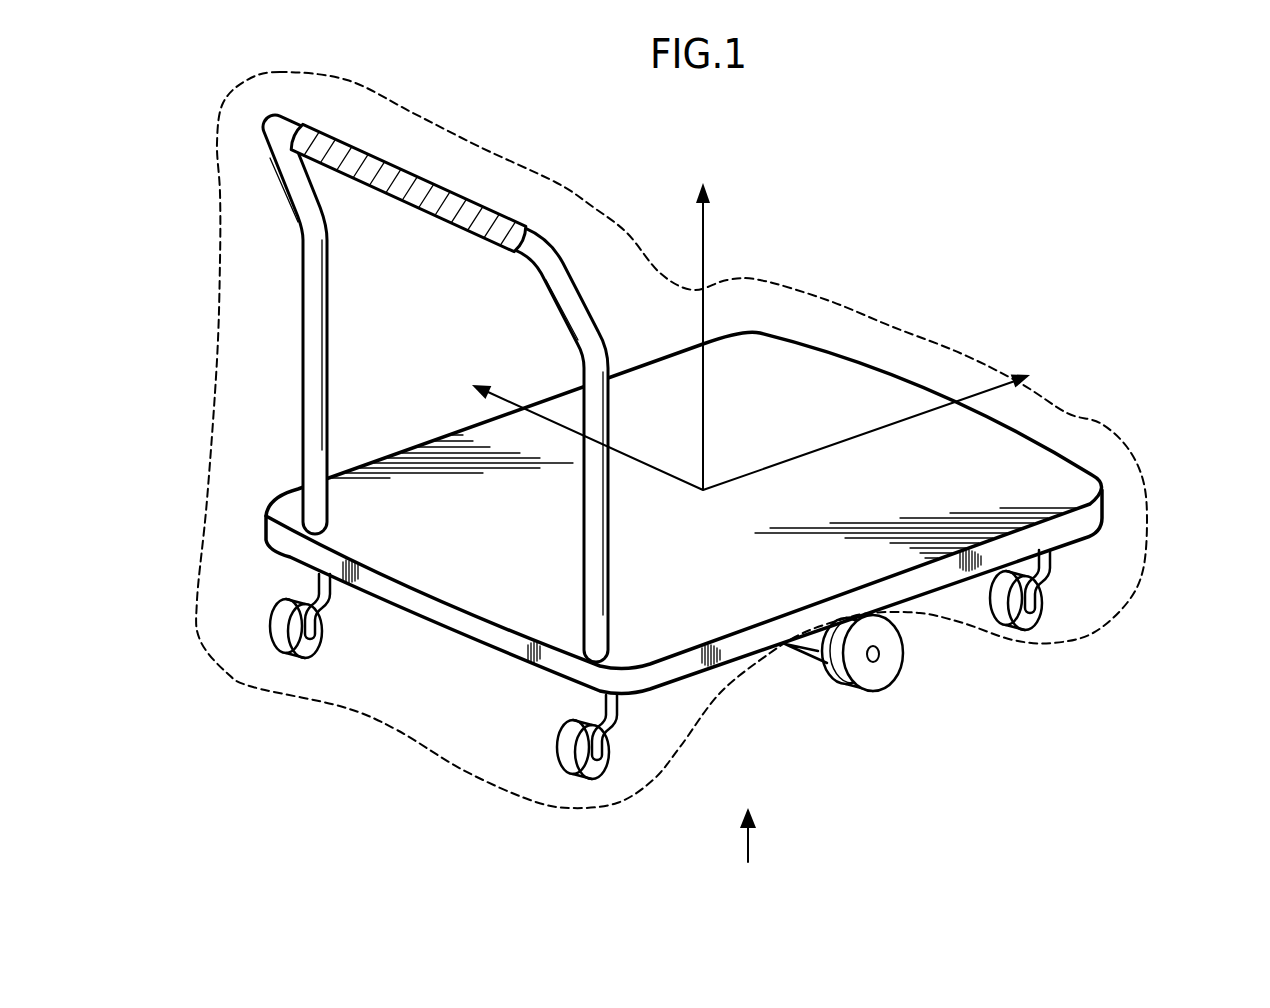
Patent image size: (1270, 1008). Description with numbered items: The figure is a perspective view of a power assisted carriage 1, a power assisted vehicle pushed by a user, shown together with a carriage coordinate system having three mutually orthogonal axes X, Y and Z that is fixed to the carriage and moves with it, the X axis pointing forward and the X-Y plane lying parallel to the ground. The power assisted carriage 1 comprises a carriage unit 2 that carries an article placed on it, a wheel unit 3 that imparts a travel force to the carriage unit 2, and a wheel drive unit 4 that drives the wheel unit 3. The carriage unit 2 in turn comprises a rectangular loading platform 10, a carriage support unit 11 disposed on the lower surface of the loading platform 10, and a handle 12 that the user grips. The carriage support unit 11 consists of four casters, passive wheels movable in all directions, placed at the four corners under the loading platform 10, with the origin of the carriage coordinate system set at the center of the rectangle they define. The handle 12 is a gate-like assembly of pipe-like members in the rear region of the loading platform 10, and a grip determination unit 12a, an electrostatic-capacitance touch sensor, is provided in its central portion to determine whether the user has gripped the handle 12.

The power assisted carriage 1 is at (288, 741).
The carriage unit 2 is at (1166, 510).
The wheel unit 3 is at (880, 672).
The wheel drive unit 4 is at (812, 647).
The loading platform 10 is at (993, 447).
The carriage support unit 11 is at (300, 644).
The handle 12 is at (380, 373).
The grip determination unit 12a is at (421, 185).